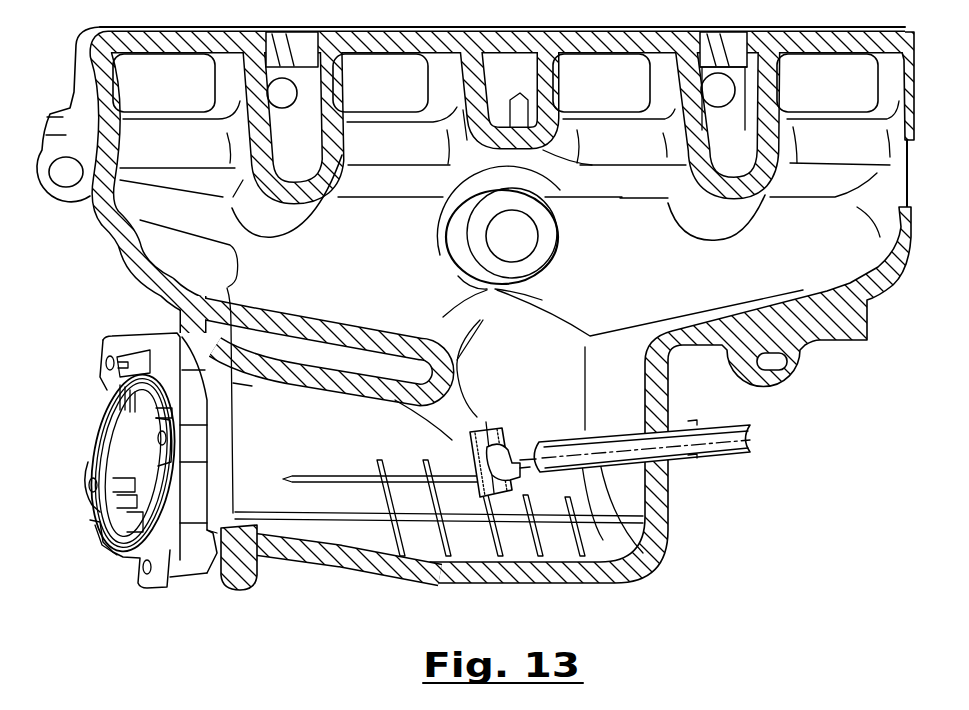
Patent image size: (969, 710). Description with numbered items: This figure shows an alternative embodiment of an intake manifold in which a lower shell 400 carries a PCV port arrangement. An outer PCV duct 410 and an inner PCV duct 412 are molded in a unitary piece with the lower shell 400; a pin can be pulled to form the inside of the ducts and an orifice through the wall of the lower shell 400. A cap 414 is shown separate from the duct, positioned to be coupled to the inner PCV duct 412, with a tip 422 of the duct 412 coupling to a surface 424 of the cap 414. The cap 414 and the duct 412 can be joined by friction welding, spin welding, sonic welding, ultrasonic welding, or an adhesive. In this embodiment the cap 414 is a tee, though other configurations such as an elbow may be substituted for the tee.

The lower shell 400 is at (682, 284).
The outer PCV duct 410 is at (742, 458).
The inner PCV duct 412 is at (641, 557).
The cap 414 is at (490, 427).
The tip of duct 422 is at (533, 420).
The surface of cap 424 is at (530, 432).